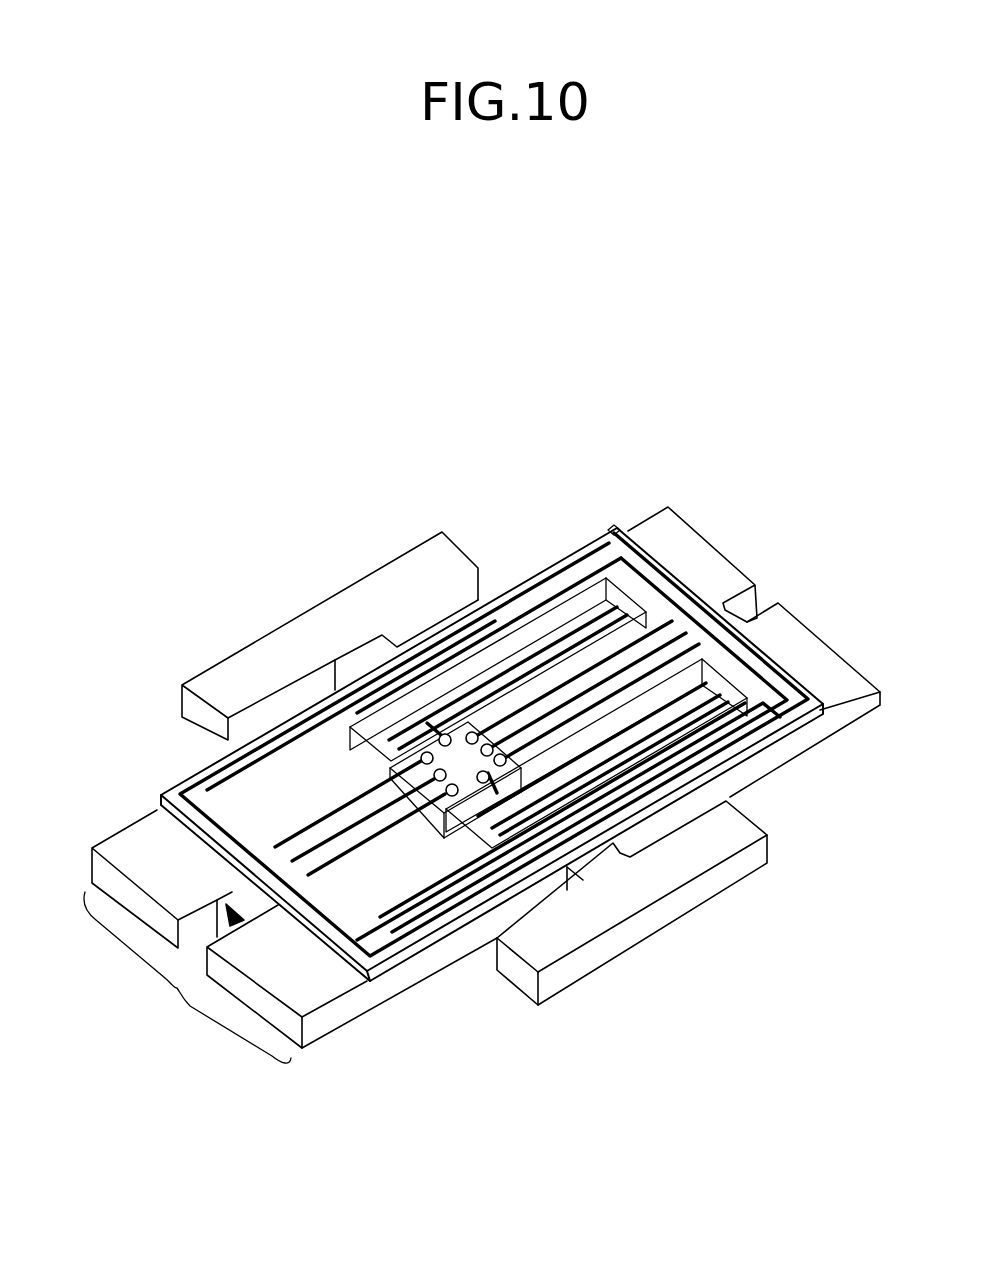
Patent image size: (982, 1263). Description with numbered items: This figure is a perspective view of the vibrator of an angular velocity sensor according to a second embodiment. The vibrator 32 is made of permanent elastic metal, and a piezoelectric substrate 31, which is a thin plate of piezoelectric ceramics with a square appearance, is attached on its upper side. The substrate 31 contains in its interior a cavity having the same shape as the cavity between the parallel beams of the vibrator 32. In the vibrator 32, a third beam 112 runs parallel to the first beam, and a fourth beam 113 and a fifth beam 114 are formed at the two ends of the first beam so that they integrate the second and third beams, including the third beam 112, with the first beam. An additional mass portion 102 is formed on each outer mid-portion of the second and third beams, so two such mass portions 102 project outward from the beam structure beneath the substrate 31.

The piezoelectric substrate 31 is at (614, 527).
The vibrator 32 is at (187, 977).
The additional mass portion 102 is at (338, 616).
The third beam 112 is at (418, 973).
The fourth beam 113 is at (722, 570).
The fifth beam 114 is at (178, 893).